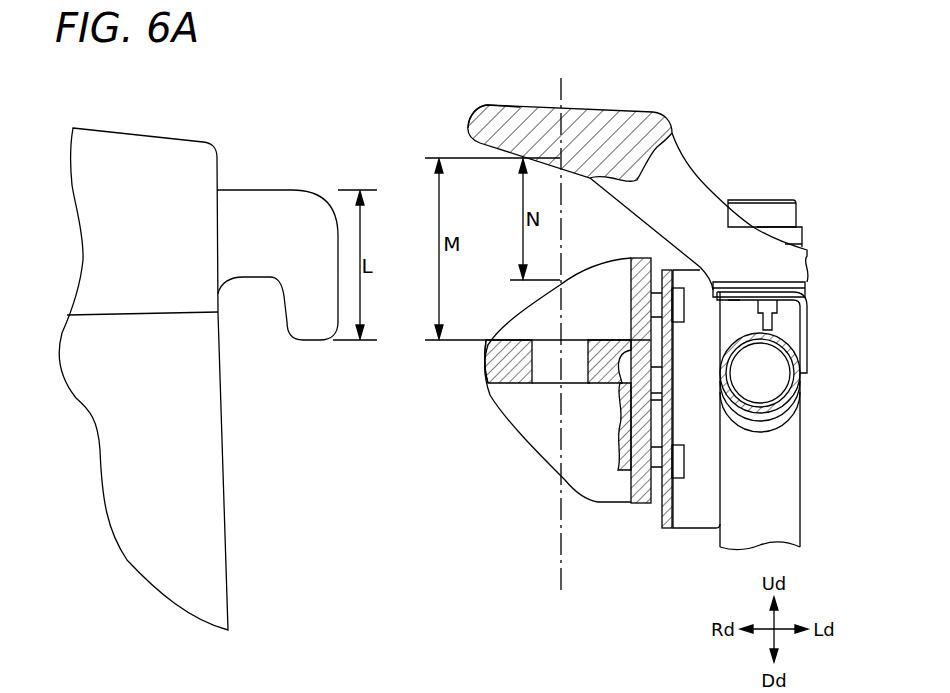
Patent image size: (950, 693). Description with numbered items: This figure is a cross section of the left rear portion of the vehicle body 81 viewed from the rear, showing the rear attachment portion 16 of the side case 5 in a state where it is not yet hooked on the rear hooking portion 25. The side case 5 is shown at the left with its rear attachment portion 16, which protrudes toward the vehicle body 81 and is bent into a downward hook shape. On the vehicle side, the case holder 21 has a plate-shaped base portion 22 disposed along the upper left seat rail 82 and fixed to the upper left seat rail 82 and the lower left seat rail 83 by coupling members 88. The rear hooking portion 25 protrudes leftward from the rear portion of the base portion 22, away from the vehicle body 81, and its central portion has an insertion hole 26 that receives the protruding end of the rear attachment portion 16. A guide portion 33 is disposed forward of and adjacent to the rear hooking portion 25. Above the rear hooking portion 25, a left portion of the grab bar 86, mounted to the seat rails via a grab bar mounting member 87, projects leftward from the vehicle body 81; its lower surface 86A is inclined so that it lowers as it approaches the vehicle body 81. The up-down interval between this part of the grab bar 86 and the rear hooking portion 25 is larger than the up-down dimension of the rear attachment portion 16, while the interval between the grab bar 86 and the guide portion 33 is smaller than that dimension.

The side case 5 is at (114, 118).
The rear attachment portion 16 is at (247, 188).
The case holder 21 is at (488, 432).
The base portion 22 is at (647, 504).
The rear hooking portion 25 is at (486, 364).
The insertion hole 26 is at (538, 346).
The guide portion 33 is at (537, 312).
The vehicle body 81 is at (800, 175).
The upper left seat rail 82 is at (805, 378).
The lower left seat rail 83 is at (793, 503).
The grab bar 86 is at (607, 113).
The lower surface 86A is at (473, 142).
The grab bar mounting member 87 is at (806, 330).
The coupling member 88 is at (693, 512).